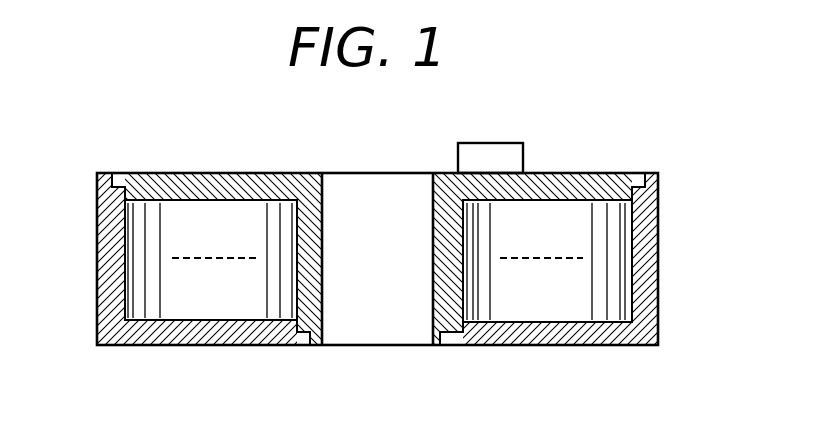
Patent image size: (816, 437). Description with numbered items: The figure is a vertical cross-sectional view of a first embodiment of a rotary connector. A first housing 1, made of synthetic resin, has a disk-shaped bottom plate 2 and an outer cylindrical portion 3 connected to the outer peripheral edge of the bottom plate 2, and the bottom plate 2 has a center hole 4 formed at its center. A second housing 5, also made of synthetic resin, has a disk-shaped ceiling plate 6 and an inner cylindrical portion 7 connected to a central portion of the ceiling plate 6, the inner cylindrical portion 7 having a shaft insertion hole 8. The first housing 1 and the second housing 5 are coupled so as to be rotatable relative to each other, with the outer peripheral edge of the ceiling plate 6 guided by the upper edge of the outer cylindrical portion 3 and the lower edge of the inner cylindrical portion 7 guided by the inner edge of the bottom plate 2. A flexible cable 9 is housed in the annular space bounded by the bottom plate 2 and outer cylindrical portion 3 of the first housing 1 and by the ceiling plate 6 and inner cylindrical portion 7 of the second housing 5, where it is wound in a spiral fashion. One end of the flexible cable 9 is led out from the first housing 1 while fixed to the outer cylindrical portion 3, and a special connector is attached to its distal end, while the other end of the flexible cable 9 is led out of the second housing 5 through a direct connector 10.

The first housing 1 is at (661, 237).
The bottom plate 2 is at (555, 331).
The outer cylindrical portion 3 is at (650, 298).
The center hole 4 is at (440, 345).
The second housing 5 is at (136, 169).
The ceiling plate 6 is at (267, 180).
The inner cylindrical portion 7 is at (322, 246).
The shaft insertion hole 8 is at (352, 318).
The flexible cable 9 is at (143, 306).
The direct connector 10 is at (524, 155).